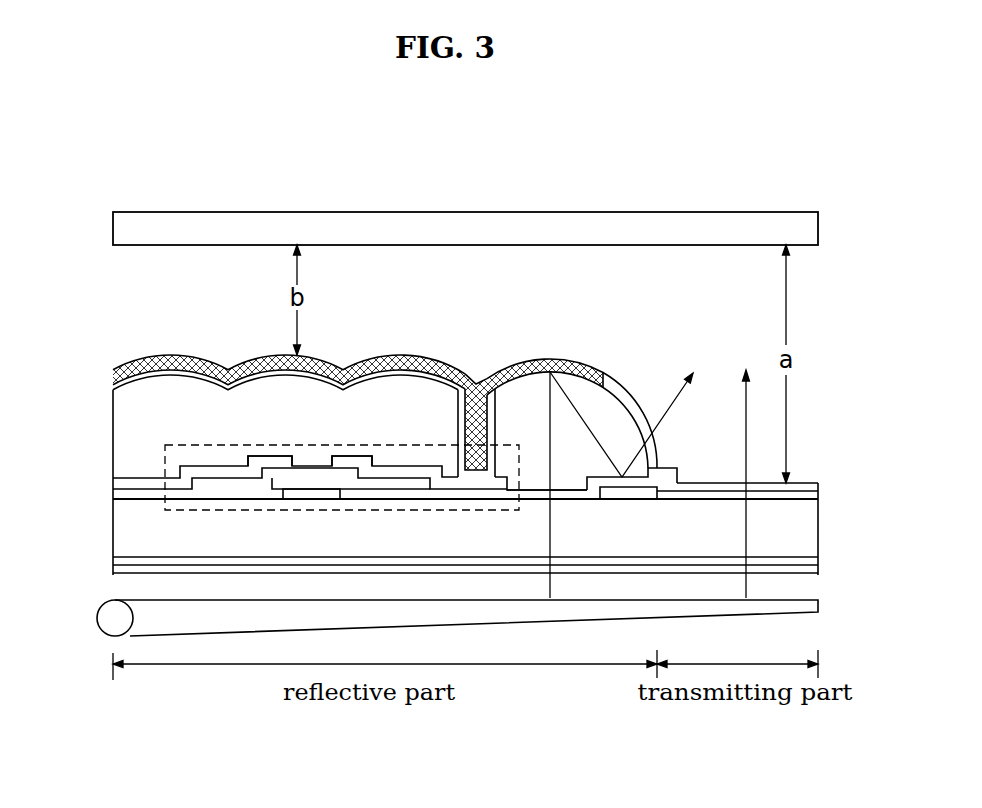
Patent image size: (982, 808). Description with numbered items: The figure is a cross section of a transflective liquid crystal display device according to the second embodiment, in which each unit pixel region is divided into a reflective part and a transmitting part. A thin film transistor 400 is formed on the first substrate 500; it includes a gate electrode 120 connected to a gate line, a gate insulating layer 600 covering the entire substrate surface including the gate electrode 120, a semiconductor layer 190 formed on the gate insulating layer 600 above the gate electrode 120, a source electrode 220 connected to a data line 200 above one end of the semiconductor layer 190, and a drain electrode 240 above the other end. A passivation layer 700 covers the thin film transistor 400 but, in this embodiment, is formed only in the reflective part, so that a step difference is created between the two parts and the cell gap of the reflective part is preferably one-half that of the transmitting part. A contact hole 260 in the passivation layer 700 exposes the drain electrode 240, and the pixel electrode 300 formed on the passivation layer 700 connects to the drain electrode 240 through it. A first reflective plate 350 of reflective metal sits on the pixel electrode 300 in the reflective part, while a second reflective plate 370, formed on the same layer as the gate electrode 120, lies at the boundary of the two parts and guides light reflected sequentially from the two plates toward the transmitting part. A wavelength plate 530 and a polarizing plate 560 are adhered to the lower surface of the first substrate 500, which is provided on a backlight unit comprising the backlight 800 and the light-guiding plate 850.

The gate electrode 120 is at (312, 499).
The semiconductor layer 190 is at (380, 481).
The data line 200 is at (113, 484).
The source electrode 220 is at (268, 456).
The drain electrode 240 is at (348, 456).
The contact hole 260 is at (477, 378).
The pixel electrode 300 is at (550, 360).
The first reflective plate 350 is at (411, 362).
The second reflective plate 370 is at (598, 492).
The thin film transistor 400 is at (165, 500).
The first substrate 500 is at (818, 522).
The wavelength plate 530 is at (818, 558).
The polarizing plate 560 is at (818, 569).
The gate insulating layer 600 is at (818, 485).
The passivation layer 700 is at (600, 410).
The backlight 800 is at (97, 620).
The light-guiding plate 850 is at (818, 602).